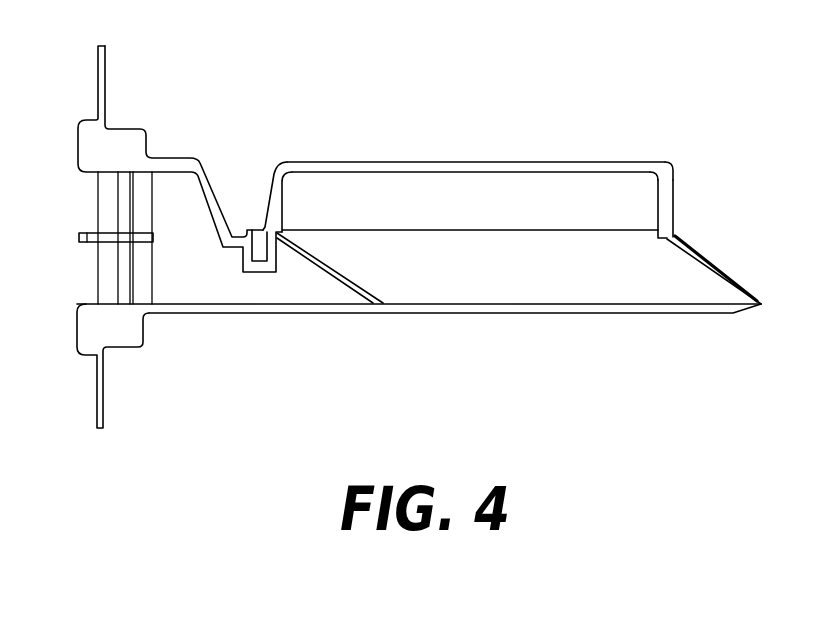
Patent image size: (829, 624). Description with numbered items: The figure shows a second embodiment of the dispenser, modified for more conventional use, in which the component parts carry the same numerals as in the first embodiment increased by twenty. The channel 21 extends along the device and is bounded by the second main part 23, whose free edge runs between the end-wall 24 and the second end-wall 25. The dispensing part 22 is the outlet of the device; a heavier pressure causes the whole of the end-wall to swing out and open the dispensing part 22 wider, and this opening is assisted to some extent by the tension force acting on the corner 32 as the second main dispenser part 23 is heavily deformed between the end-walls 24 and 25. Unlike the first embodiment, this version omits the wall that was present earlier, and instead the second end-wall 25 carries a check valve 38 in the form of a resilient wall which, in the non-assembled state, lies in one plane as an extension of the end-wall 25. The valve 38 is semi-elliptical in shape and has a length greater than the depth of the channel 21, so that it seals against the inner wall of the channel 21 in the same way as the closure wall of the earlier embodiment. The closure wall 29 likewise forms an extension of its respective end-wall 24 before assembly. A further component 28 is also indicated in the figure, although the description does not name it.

The channel 21 is at (443, 313).
The dispensing part 22 is at (627, 313).
The second main part 23 is at (407, 162).
The end-wall 24 is at (673, 202).
The second end-wall 25 is at (267, 182).
The inner edge of end wall 28 is at (683, 230).
The closure wall 29 is at (743, 282).
The corner 32 is at (672, 165).
The check valve 38 is at (332, 275).